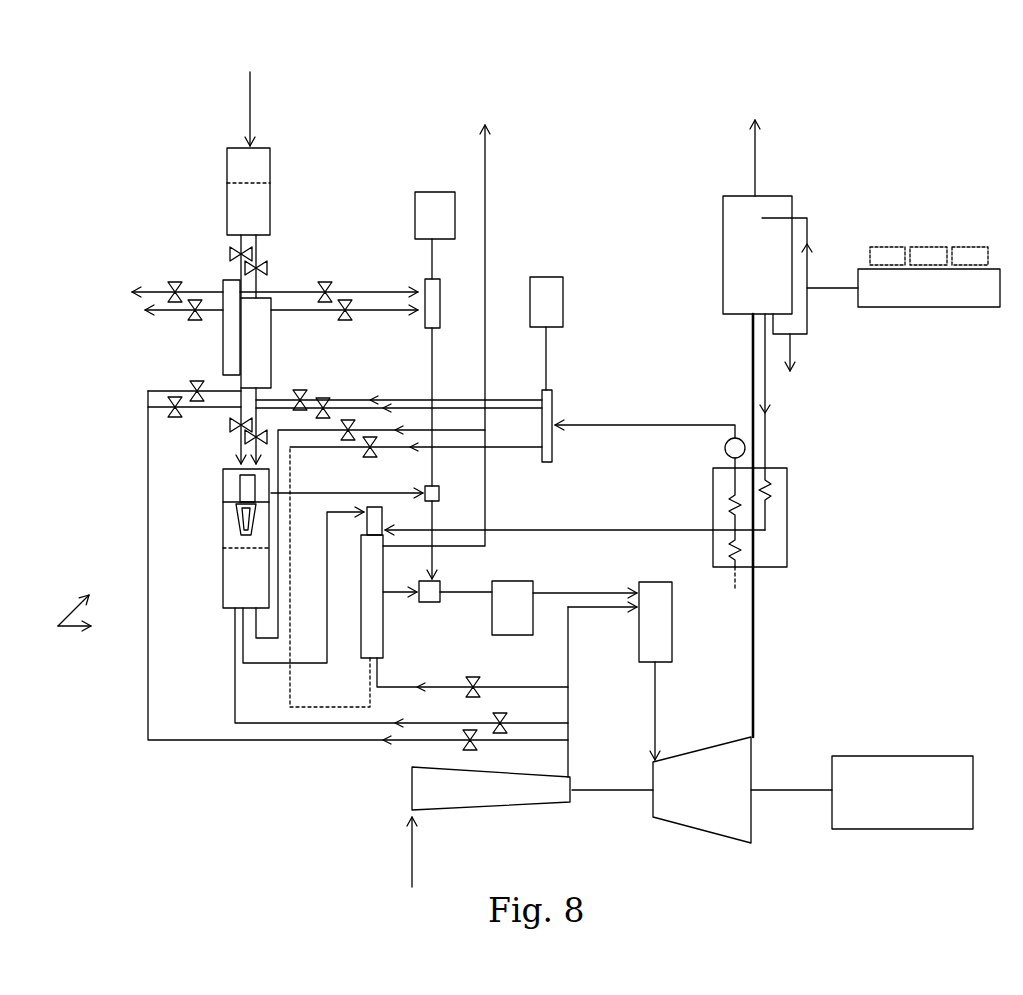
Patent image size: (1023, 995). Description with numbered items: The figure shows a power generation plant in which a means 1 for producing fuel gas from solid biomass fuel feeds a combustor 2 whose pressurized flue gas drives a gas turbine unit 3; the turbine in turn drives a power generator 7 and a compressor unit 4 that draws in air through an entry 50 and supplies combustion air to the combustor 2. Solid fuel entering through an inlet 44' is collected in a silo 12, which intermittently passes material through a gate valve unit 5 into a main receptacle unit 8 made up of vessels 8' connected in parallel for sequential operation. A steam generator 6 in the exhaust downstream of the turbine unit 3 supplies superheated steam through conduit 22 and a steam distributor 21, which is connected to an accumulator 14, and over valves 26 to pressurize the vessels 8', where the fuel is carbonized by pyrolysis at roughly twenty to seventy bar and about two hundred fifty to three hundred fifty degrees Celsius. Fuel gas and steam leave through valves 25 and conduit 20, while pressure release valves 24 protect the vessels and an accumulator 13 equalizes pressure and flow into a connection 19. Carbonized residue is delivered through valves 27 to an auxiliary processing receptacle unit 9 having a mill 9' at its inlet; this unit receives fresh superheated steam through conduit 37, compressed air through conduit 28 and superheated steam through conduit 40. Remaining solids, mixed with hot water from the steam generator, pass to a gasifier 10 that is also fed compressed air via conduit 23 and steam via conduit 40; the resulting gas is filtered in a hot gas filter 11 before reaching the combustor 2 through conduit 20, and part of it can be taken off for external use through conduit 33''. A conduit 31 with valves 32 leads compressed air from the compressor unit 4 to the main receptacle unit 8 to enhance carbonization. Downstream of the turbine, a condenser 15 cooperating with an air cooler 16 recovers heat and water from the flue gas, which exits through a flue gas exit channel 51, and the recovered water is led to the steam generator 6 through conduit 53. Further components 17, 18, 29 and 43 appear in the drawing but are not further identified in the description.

The means for the production of fuel gas from solid fuel 1 is at (66, 621).
The combustor 2 is at (674, 616).
The gas turbine unit 3 is at (701, 830).
The compressor unit 4 is at (478, 809).
The gate valve unit 5 is at (213, 243).
The steam generator 6 is at (790, 530).
The power generator 7 is at (900, 830).
The main receptacle unit 8 is at (181, 343).
The vessels 8' is at (208, 327).
The auxiliary processing receptacle unit 9 is at (228, 541).
The mill 9' is at (221, 522).
The gasifier 10 is at (388, 634).
The hot gas filter 11 is at (523, 573).
The silo 12 is at (226, 193).
The accumulator 13 is at (433, 191).
The accumulator 14 is at (544, 277).
The condenser 15 is at (722, 262).
The air cooler 16 is at (918, 309).
The supply line 17 is at (379, 308).
The valve 18 is at (433, 603).
The connection 19 is at (425, 321).
The conduit 20 is at (429, 350).
The steam distributor 21 is at (553, 410).
The conduit 22 is at (665, 424).
The conduit for gasifier air feed 23 is at (516, 687).
The pressure release valves 24 is at (176, 290).
The valves 25 is at (343, 300).
The valves 26 is at (323, 400).
The valves 27 is at (250, 438).
The conduit 28 is at (236, 672).
The valve 29 is at (343, 491).
The conduit 31 is at (149, 673).
The valves 32 is at (173, 403).
The conduit 33'' is at (475, 335).
The conduit 37 is at (254, 622).
The conduit 40 is at (369, 686).
The line 43 is at (586, 526).
The supply line 44' is at (215, 109).
The entry for air 50 is at (410, 849).
The flue gas exit channel 51 is at (762, 168).
The conduit 53 is at (771, 451).